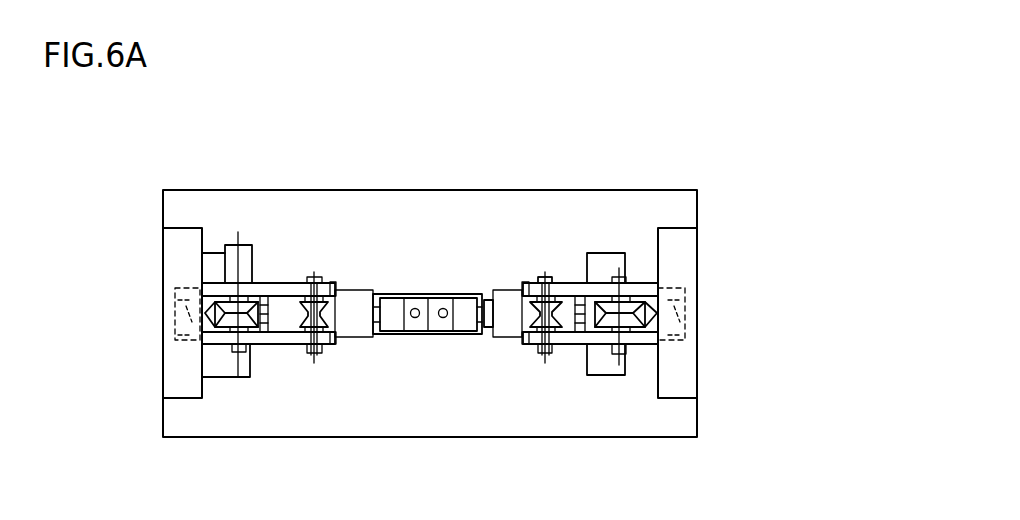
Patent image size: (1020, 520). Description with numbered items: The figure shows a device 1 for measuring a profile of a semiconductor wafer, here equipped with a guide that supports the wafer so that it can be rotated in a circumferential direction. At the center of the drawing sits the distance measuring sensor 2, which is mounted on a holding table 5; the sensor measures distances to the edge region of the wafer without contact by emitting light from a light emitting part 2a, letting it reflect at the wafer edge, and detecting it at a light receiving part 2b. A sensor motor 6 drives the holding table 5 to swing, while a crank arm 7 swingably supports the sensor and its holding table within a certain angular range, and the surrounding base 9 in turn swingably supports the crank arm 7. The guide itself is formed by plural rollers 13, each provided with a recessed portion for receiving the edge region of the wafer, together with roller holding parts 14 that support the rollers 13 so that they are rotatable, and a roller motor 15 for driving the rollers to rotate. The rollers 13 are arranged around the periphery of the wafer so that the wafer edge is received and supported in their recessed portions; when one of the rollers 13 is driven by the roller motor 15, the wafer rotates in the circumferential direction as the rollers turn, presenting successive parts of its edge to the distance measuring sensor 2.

The device for measuring a profile 1 is at (643, 182).
The distance measuring sensor 2 is at (493, 148).
The light emitting part 2a is at (443, 307).
The light receiving part 2b is at (415, 307).
The holding table 5 is at (463, 294).
The sensor motor 6 is at (488, 300).
The crank arm 7 is at (543, 277).
The base 9 is at (698, 412).
The rollers 13 is at (303, 330).
The roller holding parts 14 is at (294, 281).
The roller motor 15 is at (236, 245).